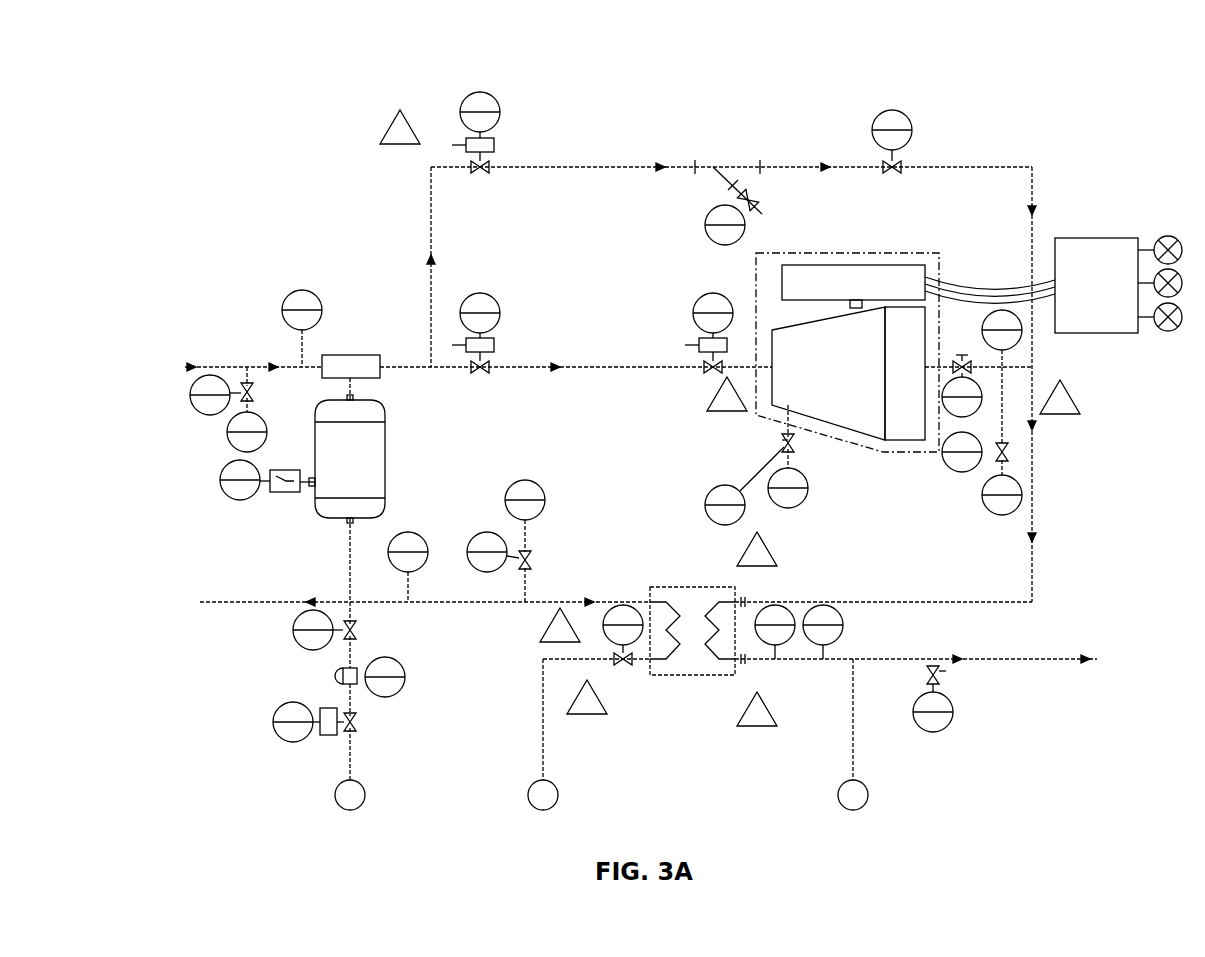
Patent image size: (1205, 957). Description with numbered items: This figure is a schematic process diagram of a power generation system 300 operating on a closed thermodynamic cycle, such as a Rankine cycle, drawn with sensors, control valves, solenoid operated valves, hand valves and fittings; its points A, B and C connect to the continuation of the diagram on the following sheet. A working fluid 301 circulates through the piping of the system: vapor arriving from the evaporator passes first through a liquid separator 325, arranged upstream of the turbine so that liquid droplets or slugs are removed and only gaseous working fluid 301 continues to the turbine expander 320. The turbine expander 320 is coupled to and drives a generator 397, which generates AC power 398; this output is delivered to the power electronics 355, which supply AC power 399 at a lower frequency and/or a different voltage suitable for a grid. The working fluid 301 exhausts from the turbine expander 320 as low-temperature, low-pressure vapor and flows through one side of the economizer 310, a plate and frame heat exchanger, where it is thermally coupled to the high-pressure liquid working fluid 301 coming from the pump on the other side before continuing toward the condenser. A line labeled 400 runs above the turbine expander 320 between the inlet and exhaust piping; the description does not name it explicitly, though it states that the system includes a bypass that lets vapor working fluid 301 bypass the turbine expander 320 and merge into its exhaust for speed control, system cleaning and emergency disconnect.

The power generation system 300 is at (128, 66).
The working fluid 301 is at (194, 360).
The economizer 310 is at (680, 586).
The turbine expander 320 is at (878, 429).
The liquid separator 325 is at (388, 464).
The power electronics 355 is at (1118, 238).
The generator 397 is at (855, 264).
The AC power 398 is at (990, 280).
The AC power 399 is at (1152, 246).
The bypass line 400 is at (572, 160).